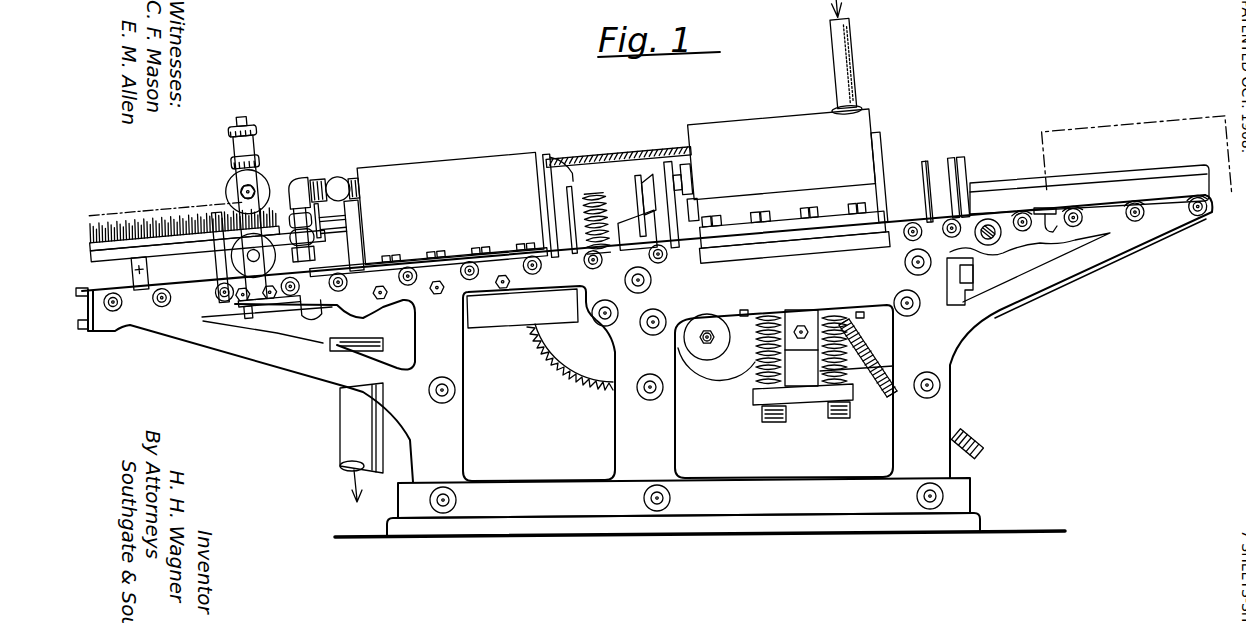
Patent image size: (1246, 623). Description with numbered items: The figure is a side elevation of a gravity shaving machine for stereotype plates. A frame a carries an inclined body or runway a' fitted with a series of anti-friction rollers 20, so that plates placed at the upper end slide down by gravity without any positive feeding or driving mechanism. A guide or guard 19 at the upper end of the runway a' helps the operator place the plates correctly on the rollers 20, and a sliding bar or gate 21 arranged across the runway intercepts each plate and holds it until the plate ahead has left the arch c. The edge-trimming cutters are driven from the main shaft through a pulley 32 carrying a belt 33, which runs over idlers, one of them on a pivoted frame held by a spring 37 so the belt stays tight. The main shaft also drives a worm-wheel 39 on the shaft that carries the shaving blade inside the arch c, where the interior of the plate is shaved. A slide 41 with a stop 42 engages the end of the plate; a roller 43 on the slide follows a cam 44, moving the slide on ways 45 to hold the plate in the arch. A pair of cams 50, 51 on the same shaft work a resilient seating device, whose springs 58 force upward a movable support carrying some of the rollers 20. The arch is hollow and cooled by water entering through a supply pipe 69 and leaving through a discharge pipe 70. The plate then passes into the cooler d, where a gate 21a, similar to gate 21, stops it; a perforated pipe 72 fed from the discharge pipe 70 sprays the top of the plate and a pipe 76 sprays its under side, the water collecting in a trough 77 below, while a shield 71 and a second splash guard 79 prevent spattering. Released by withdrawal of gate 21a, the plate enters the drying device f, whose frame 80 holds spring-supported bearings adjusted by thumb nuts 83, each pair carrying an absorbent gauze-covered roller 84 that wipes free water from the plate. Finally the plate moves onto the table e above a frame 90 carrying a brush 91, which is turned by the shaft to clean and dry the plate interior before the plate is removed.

The guide or guard 19 is at (994, 186).
The rollers 20 is at (112, 296).
The sliding bar or gate 21 is at (1043, 234).
The gate 21a is at (356, 280).
The pulley 32 is at (708, 373).
The belt 33 is at (750, 378).
The spring 37 is at (884, 400).
The worm-wheel 39 is at (598, 202).
The slide 41 is at (650, 175).
The stop 42 is at (678, 165).
The roller 43 is at (682, 190).
The cam 44 is at (704, 207).
The ways 45 is at (650, 205).
The cam 50 is at (926, 162).
The cam 51 is at (953, 158).
The springs 58 is at (826, 316).
The supply pipe 69 is at (848, 66).
The discharge pipe 70 is at (592, 160).
The shield 71 is at (552, 172).
The pipe 72 is at (338, 184).
The pipe 76 is at (330, 214).
The trough 77 is at (508, 320).
The second splash guard 79 is at (312, 238).
The frame 80 is at (252, 176).
The thumb nuts 83 is at (250, 126).
The roller 84 is at (232, 192).
The frame 90 is at (200, 268).
The brush 91 is at (130, 222).
The frame a is at (644, 366).
The inclined body or runway a' is at (1100, 267).
The arch c is at (740, 130).
The cooler d is at (426, 175).
The table e is at (180, 303).
The drying device f is at (259, 228).